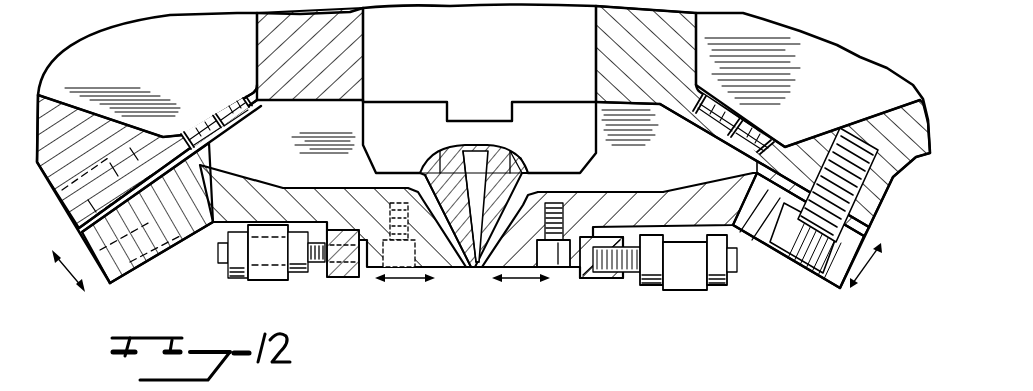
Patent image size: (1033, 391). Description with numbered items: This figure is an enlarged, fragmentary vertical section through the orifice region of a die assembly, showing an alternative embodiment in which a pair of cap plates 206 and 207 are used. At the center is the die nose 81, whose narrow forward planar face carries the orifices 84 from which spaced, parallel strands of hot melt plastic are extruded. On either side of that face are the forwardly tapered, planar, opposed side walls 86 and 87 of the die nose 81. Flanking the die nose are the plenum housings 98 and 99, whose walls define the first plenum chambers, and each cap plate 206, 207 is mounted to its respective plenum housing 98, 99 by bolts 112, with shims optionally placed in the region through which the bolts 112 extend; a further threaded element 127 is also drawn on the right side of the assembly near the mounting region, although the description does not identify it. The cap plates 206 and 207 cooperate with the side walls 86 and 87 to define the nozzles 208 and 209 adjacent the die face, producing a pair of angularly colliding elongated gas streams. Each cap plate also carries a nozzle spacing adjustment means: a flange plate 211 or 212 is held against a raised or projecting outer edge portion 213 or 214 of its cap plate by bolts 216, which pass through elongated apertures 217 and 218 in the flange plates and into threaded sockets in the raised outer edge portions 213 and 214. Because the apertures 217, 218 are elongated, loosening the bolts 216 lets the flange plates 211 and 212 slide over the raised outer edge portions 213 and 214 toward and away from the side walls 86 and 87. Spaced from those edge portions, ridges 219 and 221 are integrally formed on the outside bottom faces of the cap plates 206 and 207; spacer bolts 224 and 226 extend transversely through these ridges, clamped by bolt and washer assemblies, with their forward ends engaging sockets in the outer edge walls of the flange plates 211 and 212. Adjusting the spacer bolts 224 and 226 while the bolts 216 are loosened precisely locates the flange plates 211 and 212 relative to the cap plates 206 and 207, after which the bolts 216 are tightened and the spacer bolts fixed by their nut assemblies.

The plenum housing 98 is at (237, 80).
The plenum housing 99 is at (718, 91).
The cap plate 206 is at (243, 183).
The cap plate 207 is at (655, 188).
The die nose 81 is at (500, 168).
The side wall 87 is at (533, 188).
The aperture 218 is at (653, 182).
The bolt 112 is at (140, 268).
The adjusting screw 127 is at (845, 222).
The ridge 219 is at (253, 280).
The spacer bolt 224 is at (315, 270).
The flange plate 211 is at (346, 278).
The aperture 217 is at (387, 257).
The bolt 216 is at (562, 267).
The flange plate 212 is at (597, 278).
The spacer bolt 226 is at (677, 282).
The ridge 221 is at (690, 283).
The side wall 86 is at (443, 270).
The orifices 84 is at (477, 270).
The raised outer edge portion 213 is at (467, 270).
The nozzle 208 is at (473, 270).
The nozzle 209 is at (482, 270).
The raised outer edge portion 214 is at (490, 272).